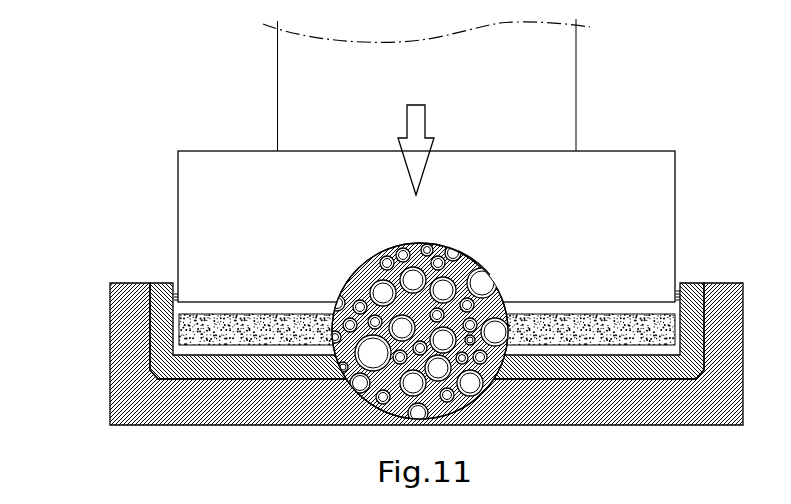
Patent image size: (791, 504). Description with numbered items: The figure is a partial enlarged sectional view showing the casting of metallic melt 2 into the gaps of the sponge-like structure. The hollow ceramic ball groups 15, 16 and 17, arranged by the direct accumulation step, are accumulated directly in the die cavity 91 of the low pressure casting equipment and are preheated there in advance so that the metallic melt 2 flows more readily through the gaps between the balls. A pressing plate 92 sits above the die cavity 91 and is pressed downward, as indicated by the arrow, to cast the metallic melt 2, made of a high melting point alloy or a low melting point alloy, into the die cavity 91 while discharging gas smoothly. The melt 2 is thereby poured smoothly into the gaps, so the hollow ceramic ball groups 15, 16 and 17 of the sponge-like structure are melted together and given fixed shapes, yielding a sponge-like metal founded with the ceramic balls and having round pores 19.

The pressing plate 92 is at (645, 165).
The die cavity 91 is at (690, 290).
The metallic melt 2 is at (200, 305).
The hollow ceramic ball group 15 is at (362, 264).
The hollow ceramic ball group 16 is at (470, 258).
The hollow ceramic ball group 17 is at (400, 248).
The round pores 19 is at (486, 288).